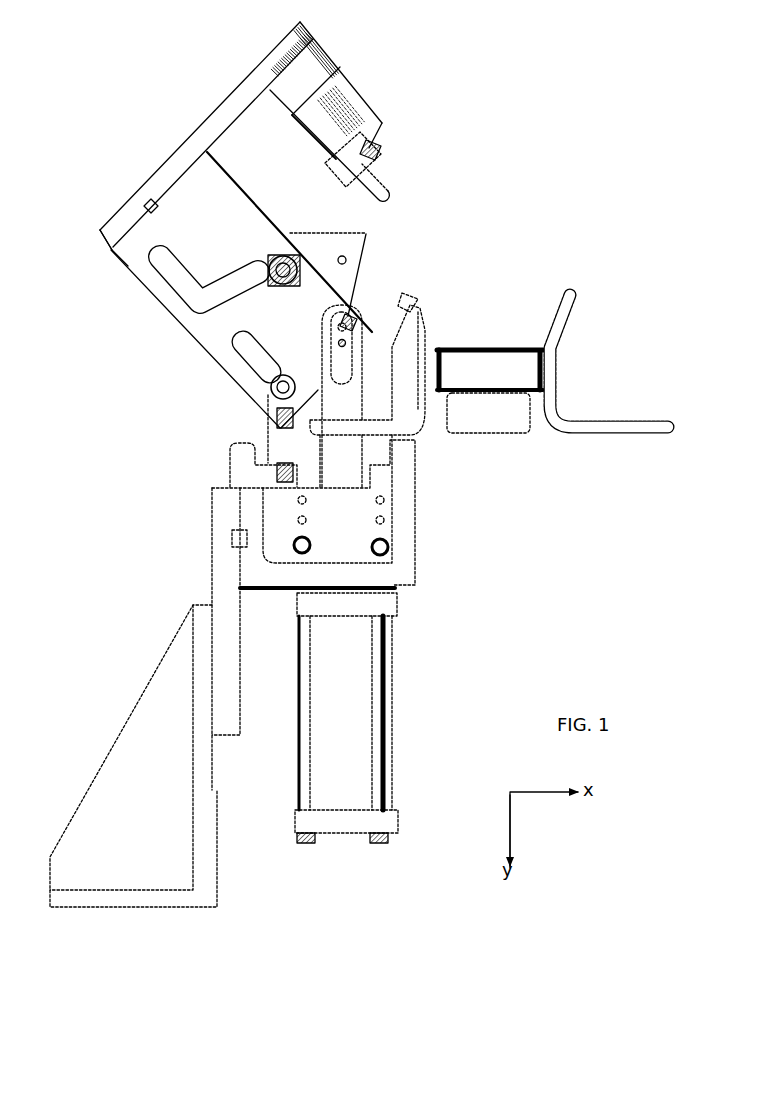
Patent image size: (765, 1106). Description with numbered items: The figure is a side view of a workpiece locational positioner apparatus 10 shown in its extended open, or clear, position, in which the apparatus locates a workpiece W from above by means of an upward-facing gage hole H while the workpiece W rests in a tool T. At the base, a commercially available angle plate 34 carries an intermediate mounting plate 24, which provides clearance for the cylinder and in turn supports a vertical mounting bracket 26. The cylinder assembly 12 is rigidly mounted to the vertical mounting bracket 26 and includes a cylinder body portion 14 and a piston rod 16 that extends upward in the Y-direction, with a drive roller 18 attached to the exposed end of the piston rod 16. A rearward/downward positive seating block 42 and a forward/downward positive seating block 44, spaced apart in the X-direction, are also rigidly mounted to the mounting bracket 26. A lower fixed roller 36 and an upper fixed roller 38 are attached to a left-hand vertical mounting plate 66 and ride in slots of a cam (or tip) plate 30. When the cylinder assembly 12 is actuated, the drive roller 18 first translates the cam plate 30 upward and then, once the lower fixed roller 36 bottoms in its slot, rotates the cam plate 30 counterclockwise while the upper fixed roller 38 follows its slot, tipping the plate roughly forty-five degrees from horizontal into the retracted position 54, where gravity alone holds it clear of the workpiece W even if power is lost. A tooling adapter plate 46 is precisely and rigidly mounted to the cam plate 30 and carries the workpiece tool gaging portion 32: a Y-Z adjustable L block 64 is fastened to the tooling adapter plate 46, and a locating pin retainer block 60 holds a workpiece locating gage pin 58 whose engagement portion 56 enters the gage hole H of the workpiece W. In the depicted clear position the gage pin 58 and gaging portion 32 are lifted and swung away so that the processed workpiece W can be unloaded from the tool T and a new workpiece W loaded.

The workpiece locational positioner apparatus 10 is at (401, 603).
The cylinder assembly 12 is at (389, 682).
The cylinder body portion 14 is at (389, 731).
The piston rod 16 is at (413, 301).
The drive roller 18 is at (369, 356).
The intermediate mounting plate 24 is at (211, 538).
The vertical mounting bracket 26 is at (237, 562).
The cam plate 30 is at (106, 264).
The workpiece tool gaging portion 32 is at (361, 94).
The angle plate 34 is at (129, 711).
The lower fixed roller 36 is at (268, 384).
The upper fixed roller 38 is at (283, 251).
The rearward/downward positive seating block 42 is at (228, 453).
The forward/downward positive seating block 44 is at (414, 550).
The tooling adapter plate 46 is at (264, 45).
The retracted (clear) position 54 is at (168, 150).
The engagement portion 56 is at (387, 174).
The workpiece locating gage pin 58 is at (374, 146).
The locating pin retainer block 60 is at (321, 156).
The Y-Z adjustable L block 64 is at (336, 45).
The vertical mounting plate (left hand) 66 is at (349, 72).
The gage hole H is at (493, 344).
The tool T is at (533, 426).
The workpiece W is at (549, 352).